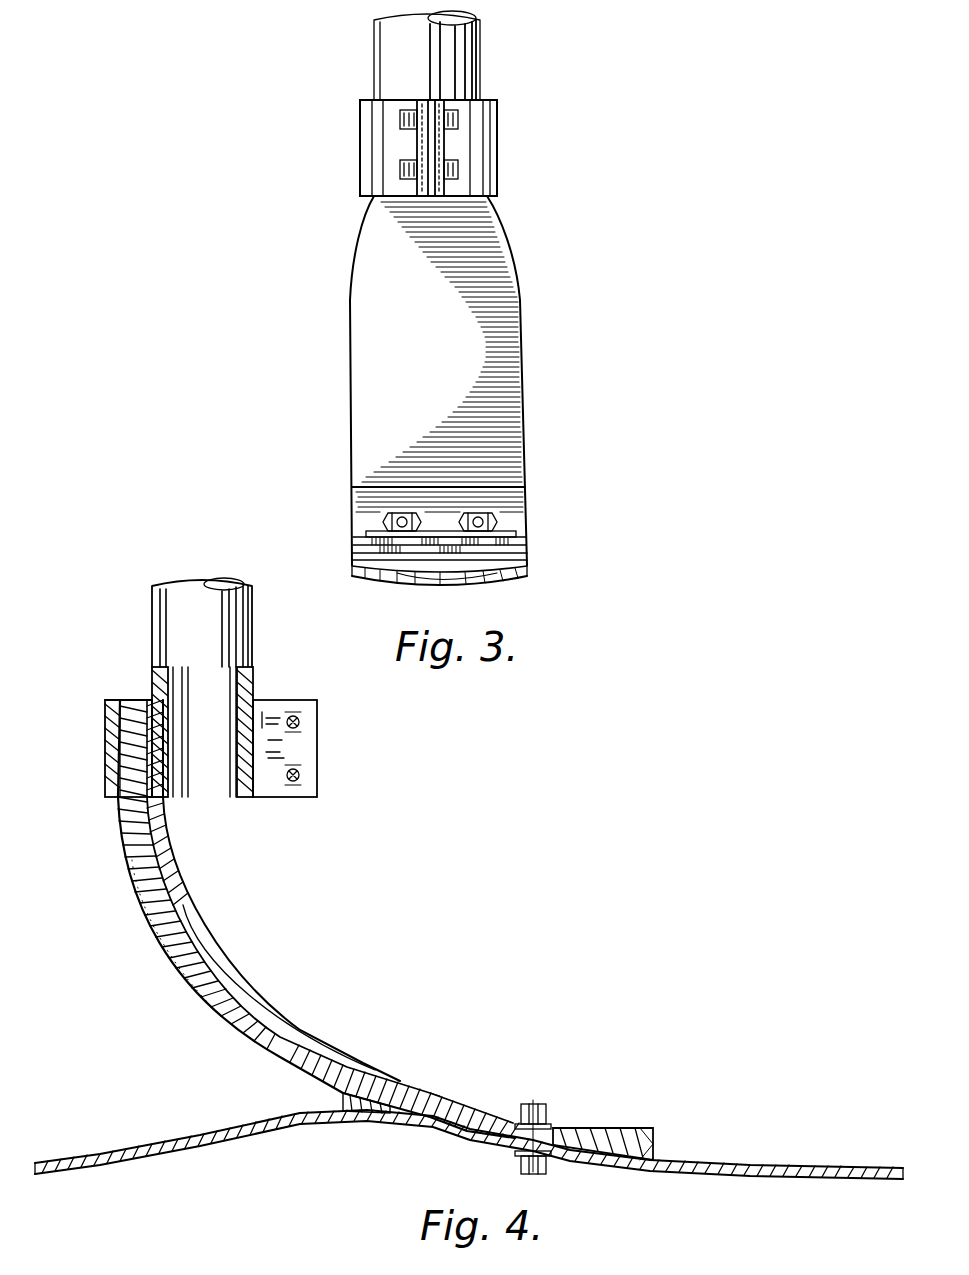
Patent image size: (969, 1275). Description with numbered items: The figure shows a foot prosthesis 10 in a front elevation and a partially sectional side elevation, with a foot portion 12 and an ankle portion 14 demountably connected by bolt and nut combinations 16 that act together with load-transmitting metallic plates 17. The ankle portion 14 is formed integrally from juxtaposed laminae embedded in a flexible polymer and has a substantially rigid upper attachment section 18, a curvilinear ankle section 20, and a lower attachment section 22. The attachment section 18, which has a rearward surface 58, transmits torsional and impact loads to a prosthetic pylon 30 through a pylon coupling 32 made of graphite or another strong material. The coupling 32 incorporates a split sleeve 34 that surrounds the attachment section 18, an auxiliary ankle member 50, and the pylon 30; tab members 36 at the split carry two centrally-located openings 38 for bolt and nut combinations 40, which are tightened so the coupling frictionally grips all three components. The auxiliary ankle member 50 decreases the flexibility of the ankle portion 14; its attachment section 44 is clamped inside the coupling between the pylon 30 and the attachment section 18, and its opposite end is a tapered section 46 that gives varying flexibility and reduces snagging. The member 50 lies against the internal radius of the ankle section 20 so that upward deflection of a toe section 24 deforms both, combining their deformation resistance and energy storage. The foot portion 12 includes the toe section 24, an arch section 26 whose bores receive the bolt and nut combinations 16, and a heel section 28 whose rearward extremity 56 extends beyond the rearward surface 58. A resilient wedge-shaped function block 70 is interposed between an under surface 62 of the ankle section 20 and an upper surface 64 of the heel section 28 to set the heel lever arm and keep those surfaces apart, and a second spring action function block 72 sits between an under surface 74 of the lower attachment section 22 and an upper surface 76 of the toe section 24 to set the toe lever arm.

In FIG. 3, the foot prosthesis 10 is at (706, 150).
In FIG. 4, the foot prosthesis 10 is at (614, 880).
In FIG. 3, the foot portion 12 is at (522, 590).
In FIG. 4, the foot portion 12 is at (787, 1188).
In FIG. 4, the ankle portion 14 is at (178, 980).
In FIG. 3, the bolt and nut combinations 16 is at (388, 515).
In FIG. 4, the bolt and nut combinations 16 is at (543, 1107).
In FIG. 3, the load-transmitting metallic plates 17 is at (372, 534).
In FIG. 4, the load-transmitting metallic plates 17 is at (524, 1125).
In FIG. 4, the upper attachment section 18 is at (124, 702).
In FIG. 4, the curvilinear ankle section 20 is at (142, 895).
In FIG. 4, the lower attachment section 22 is at (437, 1096).
In FIG. 3, the toe section 24 is at (410, 572).
In FIG. 4, the toe section 24 is at (885, 1168).
In FIG. 4, the arch section 26 is at (575, 1162).
In FIG. 4, the heel section 28 is at (205, 1148).
In FIG. 3, the prosthetic pylon 30 is at (492, 52).
In FIG. 4, the prosthetic pylon 30 is at (145, 623).
In FIG. 3, the pylon coupling 32 is at (508, 182).
In FIG. 4, the pylon coupling 32 is at (98, 778).
In FIG. 3, the split sleeve 34 is at (498, 98).
In FIG. 4, the split sleeve 34 is at (257, 698).
In FIG. 3, the tab members 36 is at (420, 150).
In FIG. 4, the tab members 36 is at (312, 752).
In FIG. 4, the openings 38 is at (300, 721).
In FIG. 3, the bolt and nut combinations 40 is at (400, 120).
In FIG. 4, the bolt and nut combinations 40 is at (293, 716).
In FIG. 4, the attachment section 44 is at (150, 702).
In FIG. 3, the tapered section 46 is at (385, 432).
In FIG. 4, the tapered section 46 is at (352, 1062).
In FIG. 3, the auxiliary ankle member 50 is at (385, 308).
In FIG. 4, the auxiliary ankle member 50 is at (203, 898).
In FIG. 4, the rearward extremity 56 is at (44, 1163).
In FIG. 4, the rearward surface 58 is at (108, 742).
In FIG. 4, the under surface 62 is at (266, 1052).
In FIG. 4, the upper surface 64 is at (300, 1114).
In FIG. 4, the function block 70 is at (372, 1114).
In FIG. 3, the second spring action function block 72 is at (520, 552).
In FIG. 4, the second spring action function block 72 is at (657, 1146).
In FIG. 4, the under surface 74 is at (616, 1128).
In FIG. 3, the upper surface 76 is at (524, 574).
In FIG. 4, the upper surface 76 is at (769, 1165).